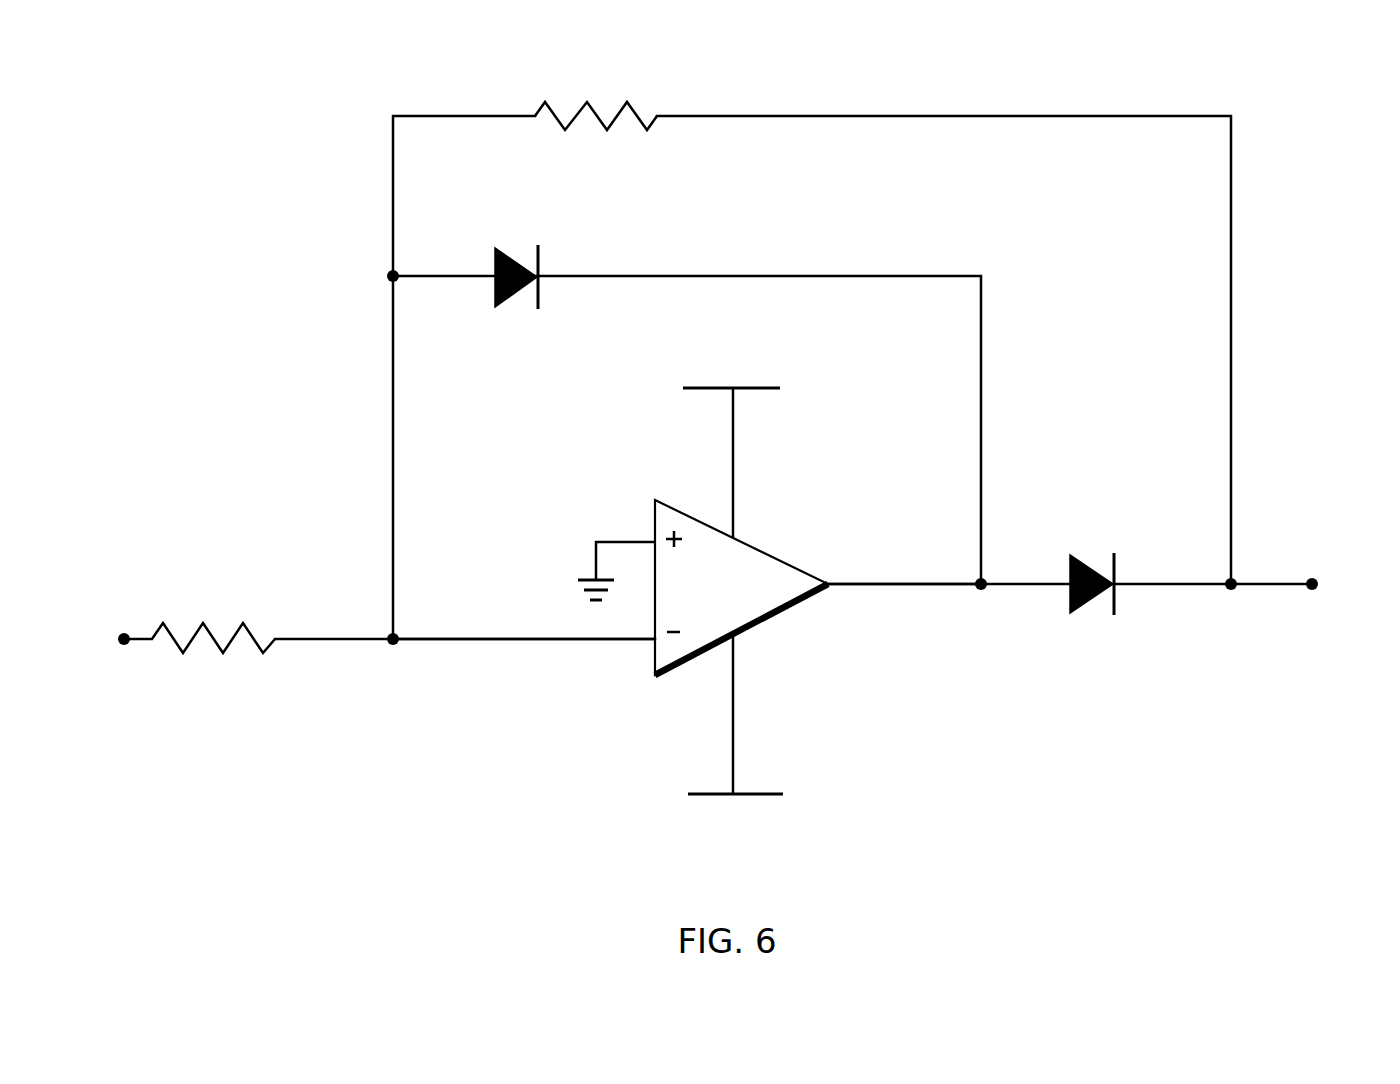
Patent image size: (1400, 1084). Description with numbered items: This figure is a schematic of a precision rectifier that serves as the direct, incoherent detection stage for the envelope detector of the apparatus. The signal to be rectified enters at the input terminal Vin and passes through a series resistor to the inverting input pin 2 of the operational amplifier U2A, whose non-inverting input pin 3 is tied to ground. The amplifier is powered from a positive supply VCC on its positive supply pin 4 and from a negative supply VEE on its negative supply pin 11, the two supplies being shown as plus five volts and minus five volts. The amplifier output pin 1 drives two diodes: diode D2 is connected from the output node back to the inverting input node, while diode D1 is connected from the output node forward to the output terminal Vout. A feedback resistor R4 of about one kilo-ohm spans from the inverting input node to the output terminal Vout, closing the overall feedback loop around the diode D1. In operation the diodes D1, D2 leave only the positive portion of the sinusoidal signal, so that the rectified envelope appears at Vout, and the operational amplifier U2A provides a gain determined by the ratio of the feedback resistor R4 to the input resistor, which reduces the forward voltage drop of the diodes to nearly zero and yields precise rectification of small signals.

The resistor R4 is at (596, 118).
The diode D2 is at (684, 395).
The diode D1 is at (1106, 562).
The operational amplifier U2A is at (811, 530).
The op amp output pin 1 is at (904, 565).
The op amp inverting input pin 2 is at (521, 621).
The op amp non-inverting input pin 3 (grounded) 3 is at (616, 552).
The op amp positive supply pin 4 is at (746, 463).
The op amp negative supply pin 11 is at (755, 715).
The positive supply VCC 5V VCC is at (750, 388).
The negative supply VEE -5V VEE is at (753, 790).
The input voltage terminal with series resistor Vin is at (165, 638).
The output voltage terminal Vout is at (1348, 581).